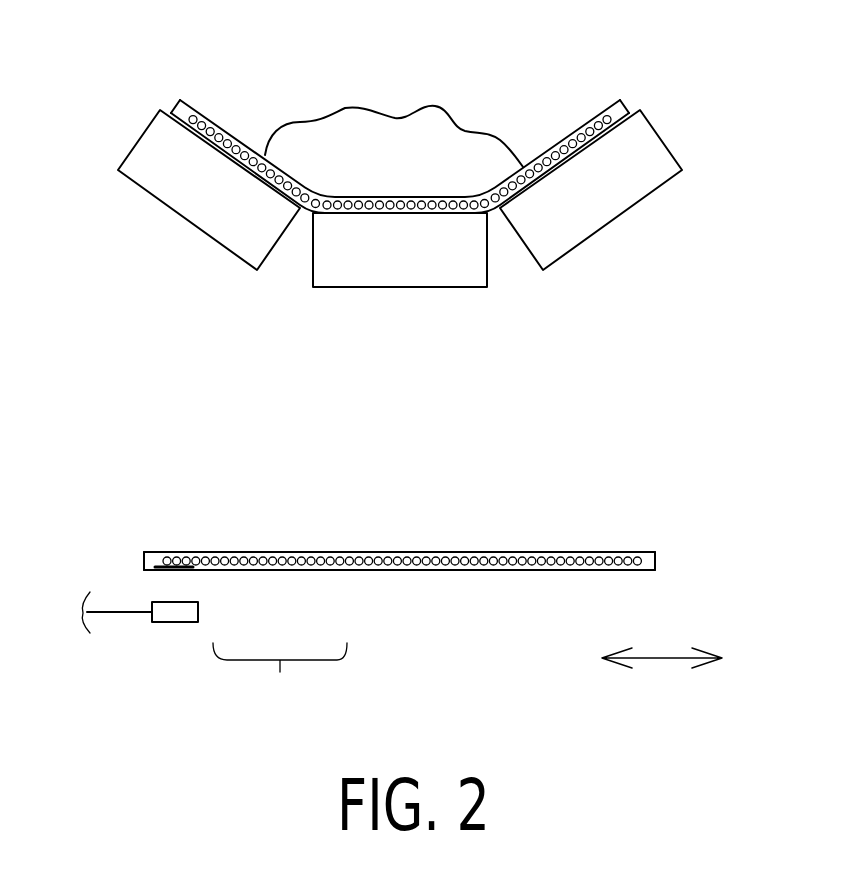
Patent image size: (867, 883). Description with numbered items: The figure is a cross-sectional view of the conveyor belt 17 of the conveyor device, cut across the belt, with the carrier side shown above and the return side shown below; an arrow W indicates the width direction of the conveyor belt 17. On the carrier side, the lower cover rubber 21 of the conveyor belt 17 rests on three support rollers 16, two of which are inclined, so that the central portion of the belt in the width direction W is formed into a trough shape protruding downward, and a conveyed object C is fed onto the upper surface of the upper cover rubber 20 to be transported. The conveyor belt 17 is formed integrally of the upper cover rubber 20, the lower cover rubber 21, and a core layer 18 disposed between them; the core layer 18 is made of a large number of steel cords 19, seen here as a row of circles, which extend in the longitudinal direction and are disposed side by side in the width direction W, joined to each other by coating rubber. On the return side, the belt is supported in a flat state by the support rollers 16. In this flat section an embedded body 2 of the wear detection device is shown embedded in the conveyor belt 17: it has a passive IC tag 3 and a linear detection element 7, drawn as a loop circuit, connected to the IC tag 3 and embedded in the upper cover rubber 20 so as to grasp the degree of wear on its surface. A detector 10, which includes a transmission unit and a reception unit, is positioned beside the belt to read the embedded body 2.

The embedded body 2 is at (280, 678).
The passive IC tag 3 is at (188, 570).
The detection element 7 is at (297, 567).
The detector 10 is at (175, 613).
The support roller 16 is at (185, 212).
The conveyor belt 17 is at (399, 340).
The core layer 18 is at (626, 105).
The steel cord 19 is at (430, 203).
The upper cover rubber 20 is at (333, 202).
The lower cover rubber 21 is at (347, 217).
The conveyed object C is at (393, 117).
The width direction W is at (662, 644).